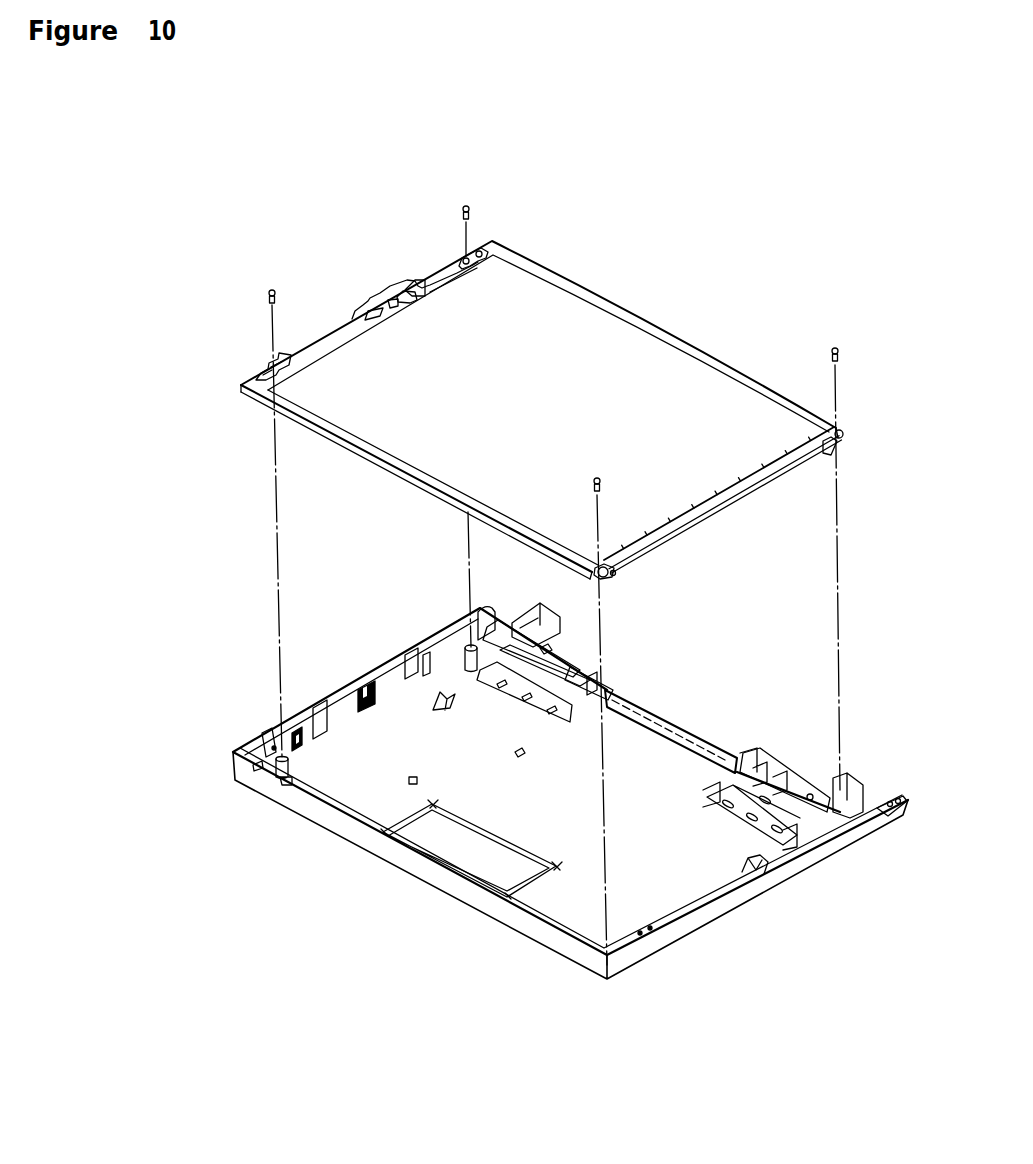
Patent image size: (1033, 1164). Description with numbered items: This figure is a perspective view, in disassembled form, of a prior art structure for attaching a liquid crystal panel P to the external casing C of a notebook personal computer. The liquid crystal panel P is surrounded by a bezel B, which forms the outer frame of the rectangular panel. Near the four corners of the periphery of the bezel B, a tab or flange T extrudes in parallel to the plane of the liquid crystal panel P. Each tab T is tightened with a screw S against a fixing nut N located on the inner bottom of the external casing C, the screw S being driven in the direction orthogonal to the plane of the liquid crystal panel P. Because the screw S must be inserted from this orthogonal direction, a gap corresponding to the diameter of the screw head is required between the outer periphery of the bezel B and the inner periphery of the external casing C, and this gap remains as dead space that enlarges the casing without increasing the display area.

The screw S is at (272, 290).
The tab T is at (256, 378).
The liquid crystal panel P is at (628, 356).
The bezel B is at (737, 493).
The fixing nut N is at (465, 645).
The external casing C is at (737, 903).